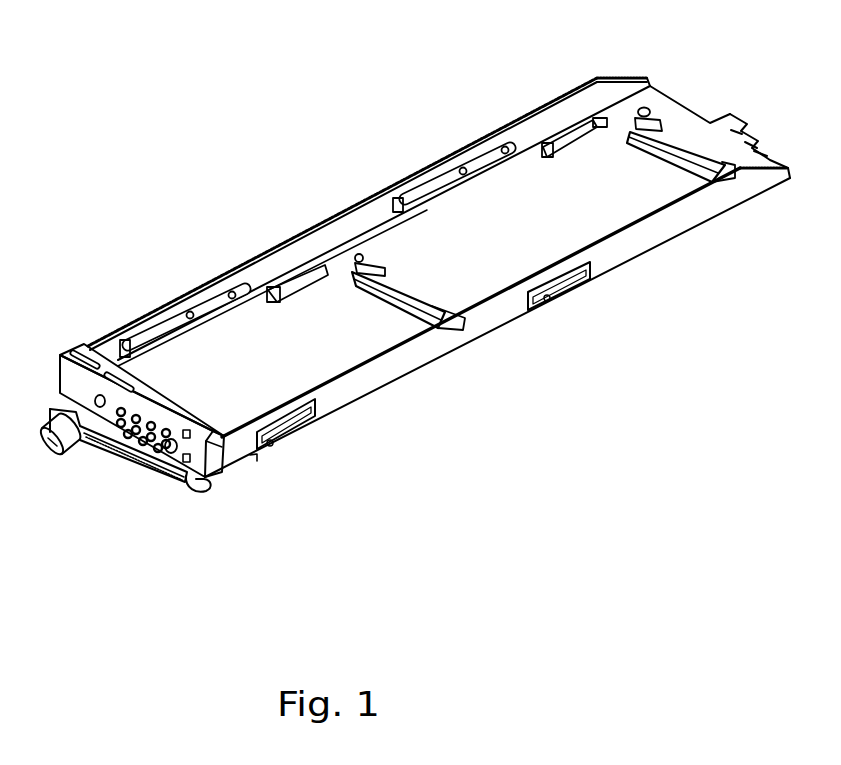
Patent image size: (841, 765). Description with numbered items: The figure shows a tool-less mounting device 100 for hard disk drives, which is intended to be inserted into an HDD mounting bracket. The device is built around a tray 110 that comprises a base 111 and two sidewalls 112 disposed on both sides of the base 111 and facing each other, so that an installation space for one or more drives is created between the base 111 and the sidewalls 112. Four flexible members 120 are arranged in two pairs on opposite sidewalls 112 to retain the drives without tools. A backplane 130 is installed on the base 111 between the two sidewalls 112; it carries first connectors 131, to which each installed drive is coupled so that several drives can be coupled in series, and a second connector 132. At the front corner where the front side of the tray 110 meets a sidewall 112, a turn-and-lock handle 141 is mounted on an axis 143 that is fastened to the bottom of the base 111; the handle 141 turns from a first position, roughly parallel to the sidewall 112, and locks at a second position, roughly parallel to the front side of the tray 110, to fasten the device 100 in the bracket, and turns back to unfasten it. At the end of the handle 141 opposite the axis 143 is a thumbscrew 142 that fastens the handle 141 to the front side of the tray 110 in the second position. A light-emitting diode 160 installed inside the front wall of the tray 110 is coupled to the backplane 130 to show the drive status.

The tool-less mounting device 100 is at (46, 62).
The tray 110 is at (247, 187).
The base 111 is at (293, 323).
The sidewall 112 is at (330, 250).
The flexible member 120 is at (170, 312).
The backplane 130 is at (607, 198).
The first connector 131 is at (413, 298).
The second connector 132 is at (745, 140).
The turn-and-lock handle 141 is at (157, 467).
The thumbscrew 142 is at (47, 437).
The axis 143 is at (200, 490).
The light-emitting diode 160 is at (127, 427).